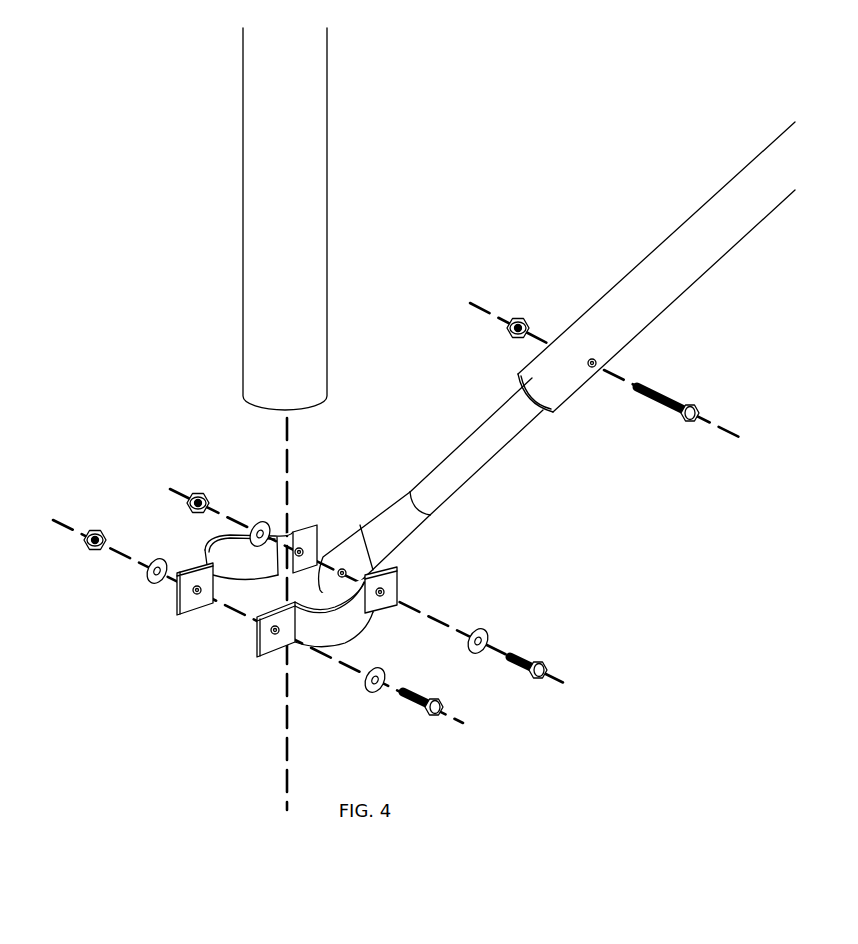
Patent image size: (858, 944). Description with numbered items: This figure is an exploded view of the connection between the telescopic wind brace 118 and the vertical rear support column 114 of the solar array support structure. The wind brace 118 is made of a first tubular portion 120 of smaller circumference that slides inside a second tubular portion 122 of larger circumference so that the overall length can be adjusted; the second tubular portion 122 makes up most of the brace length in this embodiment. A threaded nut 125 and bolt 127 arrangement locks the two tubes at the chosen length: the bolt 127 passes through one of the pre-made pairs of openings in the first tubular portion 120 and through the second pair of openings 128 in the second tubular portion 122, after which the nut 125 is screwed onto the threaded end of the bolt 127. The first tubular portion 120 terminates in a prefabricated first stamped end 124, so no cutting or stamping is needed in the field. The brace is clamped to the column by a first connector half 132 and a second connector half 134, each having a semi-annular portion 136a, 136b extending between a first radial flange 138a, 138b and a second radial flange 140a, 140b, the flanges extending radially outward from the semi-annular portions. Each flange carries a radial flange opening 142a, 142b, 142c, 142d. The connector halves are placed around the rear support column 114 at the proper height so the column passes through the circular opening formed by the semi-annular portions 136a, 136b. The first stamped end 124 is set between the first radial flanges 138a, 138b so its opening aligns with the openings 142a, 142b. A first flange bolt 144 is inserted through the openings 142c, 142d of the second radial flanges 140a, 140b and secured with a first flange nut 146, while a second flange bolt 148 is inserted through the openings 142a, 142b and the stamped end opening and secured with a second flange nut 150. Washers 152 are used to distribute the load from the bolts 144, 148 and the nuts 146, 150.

The rear support column 114 is at (267, 181).
The telescopic wind brace 118 is at (629, 233).
The first tubular portion 120 is at (459, 488).
The second tubular portion 122 is at (699, 217).
The first stamped end 124 is at (350, 545).
The threaded nut 125 is at (517, 318).
The bolt 127 is at (678, 393).
The second pair of openings 128 is at (600, 363).
The first connector half 132 is at (328, 637).
The second connector half 134 is at (227, 547).
The semi-annular portion 136a is at (355, 625).
The semi-annular portion 136b is at (232, 546).
The first radial flange 138a is at (425, 574).
The first radial flange 138b is at (331, 494).
The second radial flange 140a is at (233, 658).
The second radial flange 140b is at (148, 621).
The radial flange opening 142a is at (395, 592).
The radial flange opening 142b is at (300, 546).
The radial flange opening 142c is at (268, 633).
The radial flange opening 142d is at (190, 592).
The first flange bolt 144 is at (418, 692).
The first flange nut 146 is at (95, 530).
The second flange bolt 148 is at (527, 655).
The second flange nut 150 is at (198, 493).
The washers 152 is at (157, 558).